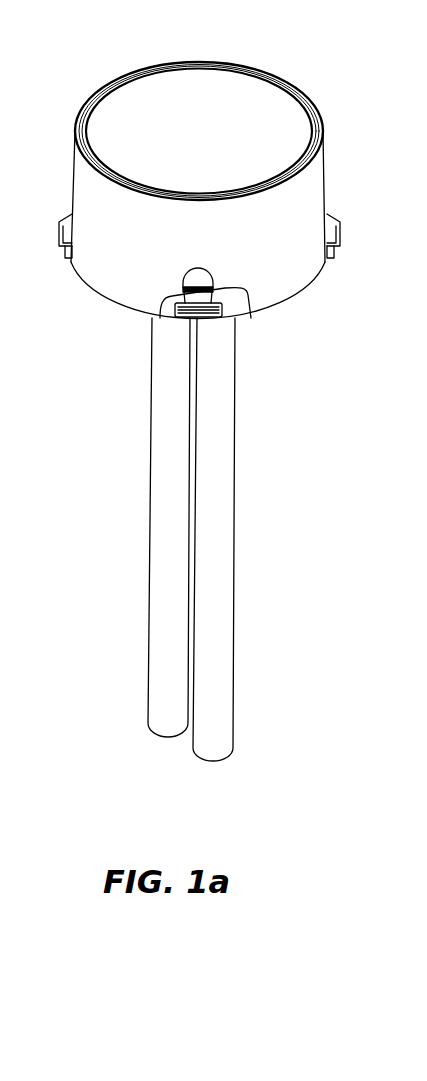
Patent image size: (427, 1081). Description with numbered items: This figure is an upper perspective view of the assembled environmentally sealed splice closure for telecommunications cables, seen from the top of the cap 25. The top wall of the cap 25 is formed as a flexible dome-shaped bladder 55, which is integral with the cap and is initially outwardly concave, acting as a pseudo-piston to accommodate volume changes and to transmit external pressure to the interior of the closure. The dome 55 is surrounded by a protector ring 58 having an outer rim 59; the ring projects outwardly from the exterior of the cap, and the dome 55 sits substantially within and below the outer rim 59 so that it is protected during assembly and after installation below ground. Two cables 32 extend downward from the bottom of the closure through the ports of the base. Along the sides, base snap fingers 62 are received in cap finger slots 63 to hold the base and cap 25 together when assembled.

The cap 25 is at (88, 283).
The cables 32 is at (152, 450).
The dome-shaped bladder 55 is at (264, 103).
The protector ring 58 is at (192, 62).
The outer rim 59 is at (132, 72).
The base snap fingers 62 is at (60, 224).
The cap finger slots 63 is at (250, 318).